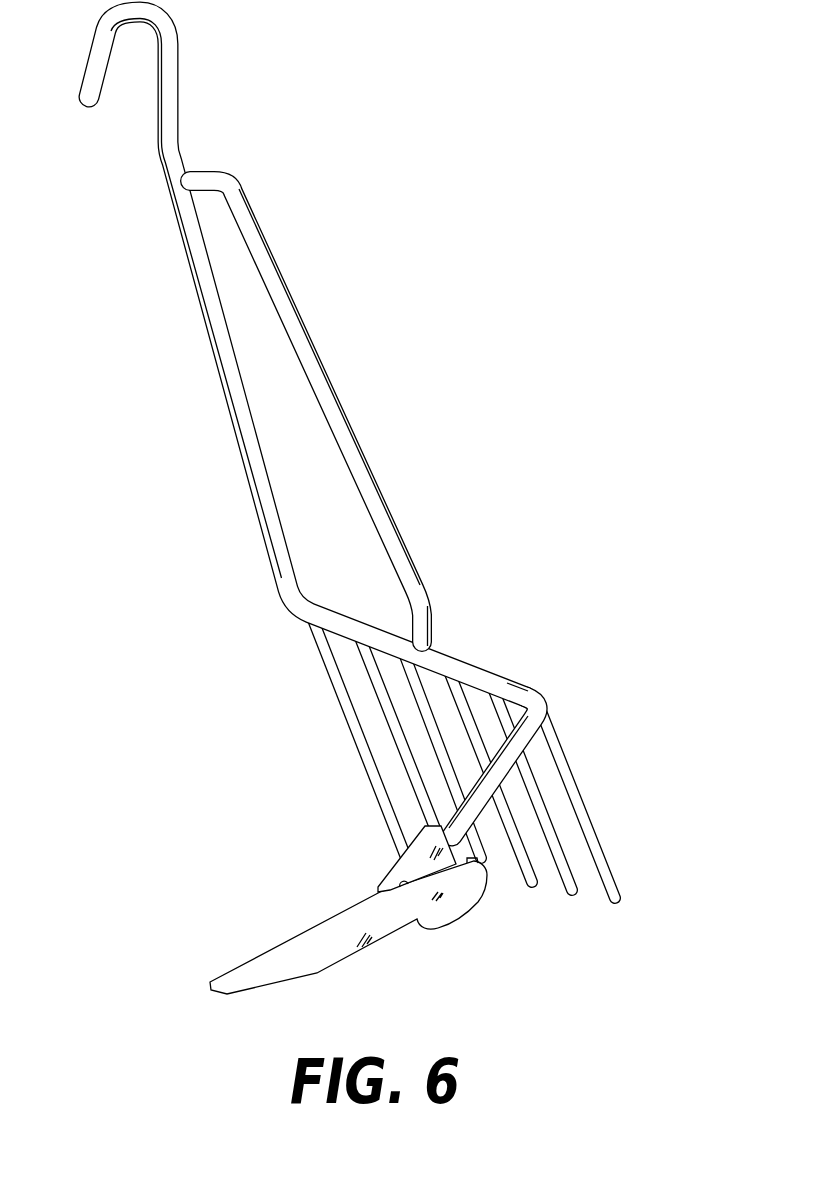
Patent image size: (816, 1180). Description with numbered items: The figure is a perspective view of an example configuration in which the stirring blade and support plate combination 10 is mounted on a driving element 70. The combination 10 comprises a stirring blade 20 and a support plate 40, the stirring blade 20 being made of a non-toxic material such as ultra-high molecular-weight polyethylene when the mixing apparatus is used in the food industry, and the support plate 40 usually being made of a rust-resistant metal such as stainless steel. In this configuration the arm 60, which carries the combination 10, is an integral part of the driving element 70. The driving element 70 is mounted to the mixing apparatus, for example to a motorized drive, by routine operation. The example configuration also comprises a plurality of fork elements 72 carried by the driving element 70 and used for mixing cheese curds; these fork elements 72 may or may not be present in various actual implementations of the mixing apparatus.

The combination 10 is at (358, 513).
The stirring blade 20 is at (367, 950).
The support plate 40 is at (423, 872).
The arm 60 is at (512, 767).
The driving element 70 is at (358, 427).
The fork elements 72 is at (347, 728).